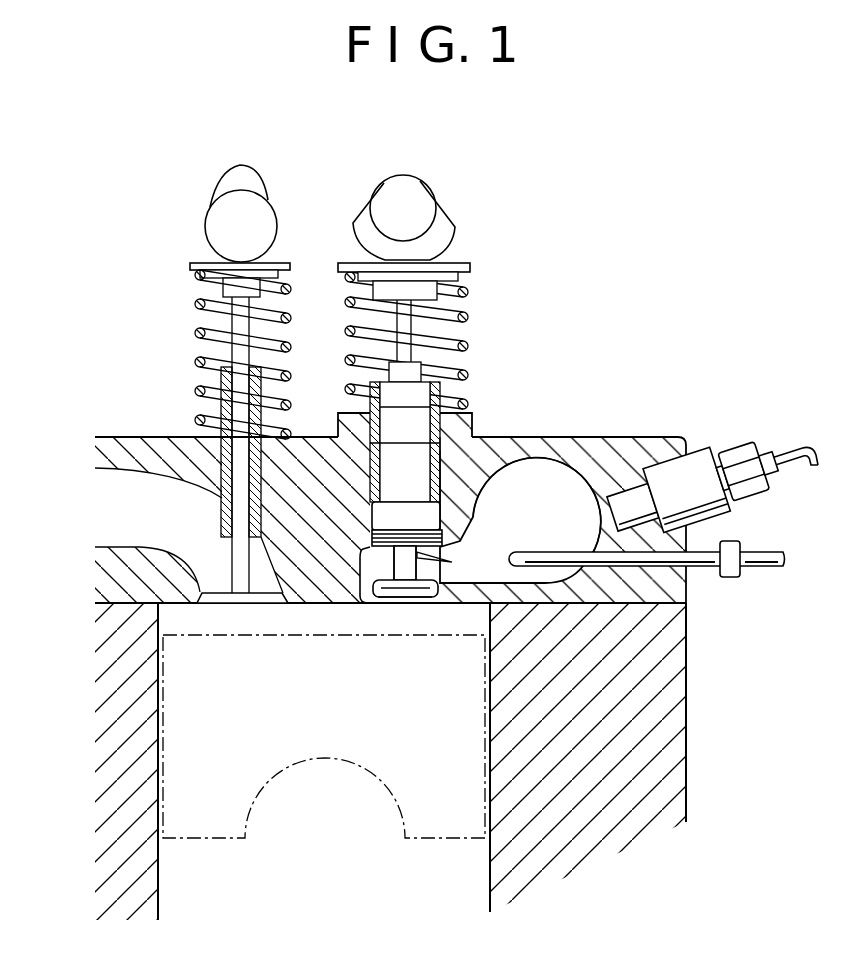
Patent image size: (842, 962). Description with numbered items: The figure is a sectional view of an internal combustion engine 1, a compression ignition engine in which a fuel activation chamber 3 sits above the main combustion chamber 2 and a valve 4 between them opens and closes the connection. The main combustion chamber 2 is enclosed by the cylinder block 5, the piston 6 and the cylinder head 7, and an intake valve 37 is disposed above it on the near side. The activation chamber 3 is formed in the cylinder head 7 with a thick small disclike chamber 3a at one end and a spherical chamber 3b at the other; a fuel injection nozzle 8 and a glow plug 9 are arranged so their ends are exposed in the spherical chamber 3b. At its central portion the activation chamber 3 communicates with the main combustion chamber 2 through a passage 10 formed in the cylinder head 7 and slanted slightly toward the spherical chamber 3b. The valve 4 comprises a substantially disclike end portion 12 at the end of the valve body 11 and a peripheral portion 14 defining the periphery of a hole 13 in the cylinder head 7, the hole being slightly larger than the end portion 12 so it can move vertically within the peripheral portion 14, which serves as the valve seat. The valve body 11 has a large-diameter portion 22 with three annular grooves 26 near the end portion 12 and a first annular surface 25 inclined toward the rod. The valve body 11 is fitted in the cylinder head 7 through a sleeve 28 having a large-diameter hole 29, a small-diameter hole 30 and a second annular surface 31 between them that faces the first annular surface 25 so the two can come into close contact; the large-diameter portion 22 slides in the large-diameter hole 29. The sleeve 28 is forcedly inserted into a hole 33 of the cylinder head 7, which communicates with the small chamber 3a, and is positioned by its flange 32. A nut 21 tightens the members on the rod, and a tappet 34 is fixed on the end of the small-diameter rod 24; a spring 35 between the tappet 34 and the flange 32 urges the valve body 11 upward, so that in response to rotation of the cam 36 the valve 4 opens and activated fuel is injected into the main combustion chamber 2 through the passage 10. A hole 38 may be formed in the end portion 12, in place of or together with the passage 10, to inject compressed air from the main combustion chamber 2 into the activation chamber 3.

The internal combustion engine 1 is at (605, 214).
The main combustion chamber 2 is at (270, 622).
The fuel activation chamber 3 is at (553, 523).
The small disclike chamber 3a is at (377, 564).
The spherical chamber 3b is at (553, 472).
The valve 4 is at (433, 607).
The cylinder block 5 is at (672, 664).
The piston 6 is at (363, 754).
The cylinder head 7 is at (632, 448).
The fuel injection nozzle 8 is at (698, 462).
The glow plug 9 is at (678, 580).
The passage 10 is at (470, 609).
The valve body 11 is at (412, 465).
The disclike end portion 12 is at (417, 610).
The hole 13 is at (410, 607).
The peripheral portion 14 is at (377, 606).
The nut 21 is at (414, 354).
The large-diameter portion 22 is at (380, 518).
The small-diameter rod 24 is at (438, 305).
The first annular surface 25 is at (450, 474).
The annular grooves 26 is at (453, 562).
The sleeve 28 is at (368, 456).
The large-diameter hole 29 is at (438, 514).
The small-diameter hole 30 is at (438, 394).
The second annular surface 31 is at (375, 484).
The flange 32 is at (340, 412).
The hole 33 is at (455, 442).
The tappet 34 is at (457, 262).
The spring 35 is at (348, 297).
The cam 36 is at (396, 186).
The intake valve 37 is at (209, 606).
The hole 38 is at (381, 607).